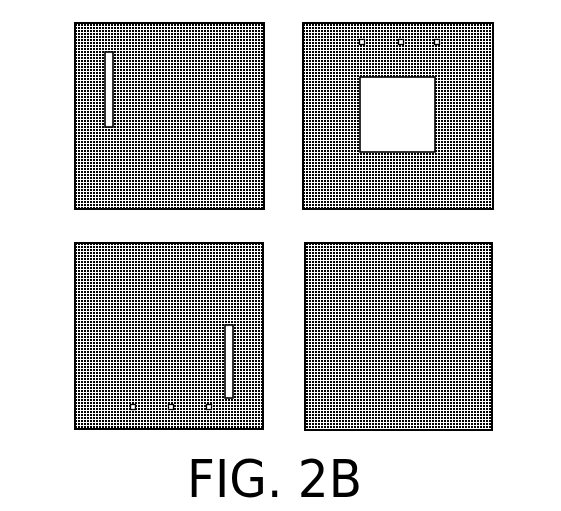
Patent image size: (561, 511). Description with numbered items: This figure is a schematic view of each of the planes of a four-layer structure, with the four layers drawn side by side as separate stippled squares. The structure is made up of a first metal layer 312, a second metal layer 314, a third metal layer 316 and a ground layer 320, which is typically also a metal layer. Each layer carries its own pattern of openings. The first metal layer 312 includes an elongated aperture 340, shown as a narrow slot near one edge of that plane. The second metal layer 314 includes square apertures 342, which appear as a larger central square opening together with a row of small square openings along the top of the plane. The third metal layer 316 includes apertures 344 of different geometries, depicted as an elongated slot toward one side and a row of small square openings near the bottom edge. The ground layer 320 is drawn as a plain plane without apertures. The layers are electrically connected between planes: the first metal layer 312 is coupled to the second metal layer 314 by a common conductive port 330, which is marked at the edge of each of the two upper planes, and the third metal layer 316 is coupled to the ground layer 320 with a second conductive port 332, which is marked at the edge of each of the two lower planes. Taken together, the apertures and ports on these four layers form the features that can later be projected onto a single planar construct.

The first metal layer 312 is at (238, 210).
The second metal layer 314 is at (470, 210).
The third metal layer 316 is at (107, 243).
The ground layer 320 is at (332, 243).
The common conductive port 330 is at (305, 131).
The second conductive port 332 is at (266, 323).
The elongated aperture 340 is at (108, 91).
The square apertures 342 is at (413, 128).
The apertures of different geometries 344 is at (233, 372).